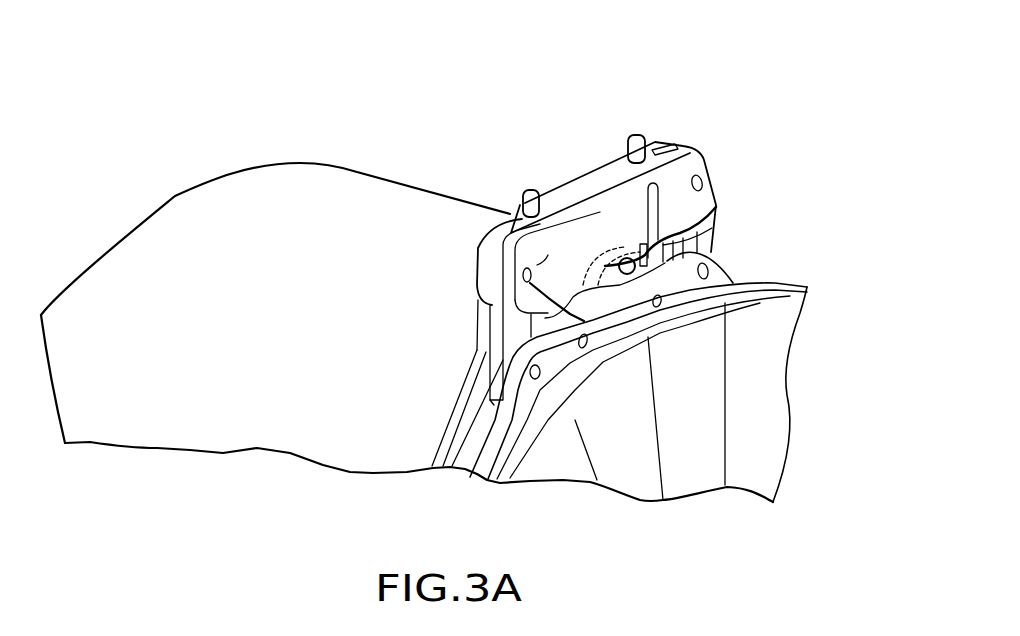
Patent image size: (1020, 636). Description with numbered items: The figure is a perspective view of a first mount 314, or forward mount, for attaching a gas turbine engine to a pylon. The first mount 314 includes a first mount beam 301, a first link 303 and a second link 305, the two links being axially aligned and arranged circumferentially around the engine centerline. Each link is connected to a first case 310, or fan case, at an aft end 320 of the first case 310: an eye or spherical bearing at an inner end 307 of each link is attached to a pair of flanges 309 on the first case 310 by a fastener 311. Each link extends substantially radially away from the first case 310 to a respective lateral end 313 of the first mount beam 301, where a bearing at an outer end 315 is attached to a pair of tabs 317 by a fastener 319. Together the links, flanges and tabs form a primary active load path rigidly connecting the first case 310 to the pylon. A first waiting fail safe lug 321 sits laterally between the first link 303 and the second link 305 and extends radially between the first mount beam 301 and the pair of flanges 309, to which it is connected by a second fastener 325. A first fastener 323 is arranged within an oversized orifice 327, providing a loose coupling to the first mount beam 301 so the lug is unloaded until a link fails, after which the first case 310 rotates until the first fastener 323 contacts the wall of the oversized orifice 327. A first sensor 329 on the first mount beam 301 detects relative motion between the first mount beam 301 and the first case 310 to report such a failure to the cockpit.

The first mount beam 301 is at (560, 188).
The first link 303 is at (502, 340).
The second link 305 is at (703, 235).
The inner end 307 is at (490, 377).
The pair of flanges 309 is at (560, 357).
The first case 310 is at (157, 431).
The fastener 311 is at (532, 379).
The lateral end 313 is at (487, 237).
The first mount 314 is at (658, 70).
The outer end 315 is at (500, 259).
The pair of tabs 317 is at (537, 265).
The fastener 319 is at (603, 302).
The aft end 320 is at (457, 465).
The first waiting fail safe lug 321 is at (601, 301).
The first fastener 323 is at (623, 258).
The second fastener 325 is at (661, 296).
The oversized orifice 327 is at (617, 264).
The first sensor 329 is at (716, 210).